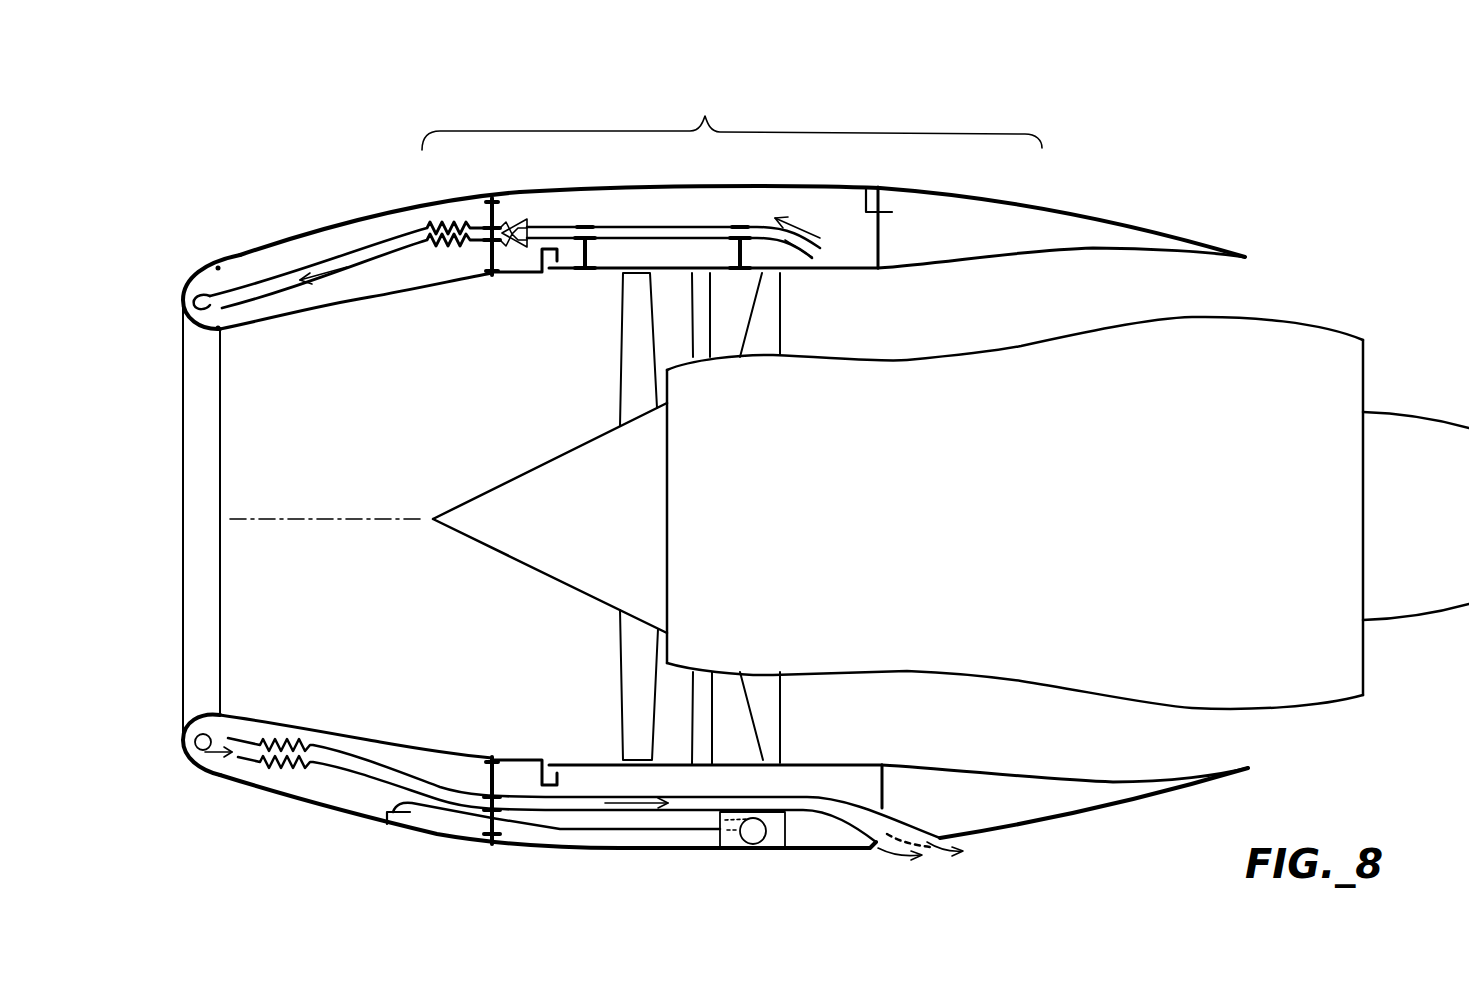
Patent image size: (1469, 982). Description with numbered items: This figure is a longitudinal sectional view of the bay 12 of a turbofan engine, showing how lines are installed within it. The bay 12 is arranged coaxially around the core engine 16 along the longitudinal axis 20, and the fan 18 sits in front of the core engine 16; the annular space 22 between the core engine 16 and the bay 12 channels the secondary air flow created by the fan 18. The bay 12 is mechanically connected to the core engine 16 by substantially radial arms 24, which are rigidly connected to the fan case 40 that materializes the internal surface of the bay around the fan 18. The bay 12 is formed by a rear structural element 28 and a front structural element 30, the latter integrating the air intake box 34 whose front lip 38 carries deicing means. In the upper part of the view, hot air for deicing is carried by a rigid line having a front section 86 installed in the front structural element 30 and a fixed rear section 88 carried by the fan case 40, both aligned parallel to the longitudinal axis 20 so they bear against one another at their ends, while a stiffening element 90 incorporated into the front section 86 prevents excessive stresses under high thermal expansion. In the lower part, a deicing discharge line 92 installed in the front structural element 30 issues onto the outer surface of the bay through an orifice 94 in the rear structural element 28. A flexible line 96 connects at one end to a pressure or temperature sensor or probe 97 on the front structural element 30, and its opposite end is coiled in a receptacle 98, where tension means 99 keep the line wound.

The bay 12 is at (732, 119).
The core engine 16 is at (1281, 312).
The fan 18 is at (630, 376).
The longitudinal axis 20 is at (308, 520).
The annular space 22 is at (1113, 277).
The arms 24 is at (758, 697).
The rear structural element 28 is at (970, 194).
The front structural element 30 is at (385, 206).
The air intake box 34 is at (362, 217).
The front lip 38 is at (217, 266).
The fan case 40 is at (845, 272).
The front section 86 is at (250, 284).
The rear section 88 is at (653, 232).
The stiffening element 90 is at (486, 212).
The deicing discharge line 92 is at (355, 760).
The orifice 94 is at (887, 840).
The flexible line 96 is at (457, 818).
The pressure or temperature sensor or probe 97 is at (393, 826).
The receptacle 98 is at (773, 838).
The tension means 99 is at (753, 835).